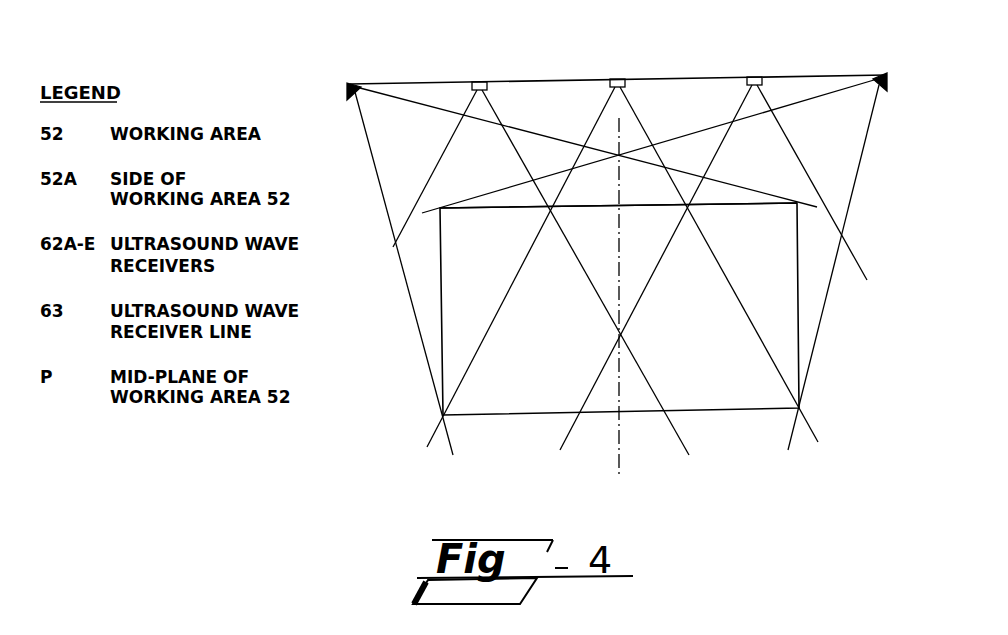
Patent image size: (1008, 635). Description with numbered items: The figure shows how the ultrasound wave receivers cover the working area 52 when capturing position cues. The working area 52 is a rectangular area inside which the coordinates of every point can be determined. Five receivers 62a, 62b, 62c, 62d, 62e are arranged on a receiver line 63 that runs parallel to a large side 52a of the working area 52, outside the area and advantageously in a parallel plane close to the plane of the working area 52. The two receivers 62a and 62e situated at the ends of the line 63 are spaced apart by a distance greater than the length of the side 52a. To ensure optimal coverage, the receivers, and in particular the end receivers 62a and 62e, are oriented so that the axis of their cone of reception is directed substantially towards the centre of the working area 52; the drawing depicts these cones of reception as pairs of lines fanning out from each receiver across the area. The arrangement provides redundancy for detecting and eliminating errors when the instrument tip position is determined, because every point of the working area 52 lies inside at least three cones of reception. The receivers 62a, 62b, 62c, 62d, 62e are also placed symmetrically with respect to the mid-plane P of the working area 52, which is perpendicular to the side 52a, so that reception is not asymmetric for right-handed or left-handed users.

The working area 52 is at (692, 351).
The large side of the working area 52a is at (730, 204).
The ultrasound wave receiver 62a is at (354, 82).
The ultrasound wave receiver 62b is at (478, 82).
The ultrasound wave receiver 62c is at (618, 79).
The ultrasound wave receiver 62d is at (753, 77).
The ultrasound wave receiver 62e is at (875, 73).
The ultrasound wave receiver line 63 is at (674, 75).
The mid-plane of the working area P is at (620, 462).